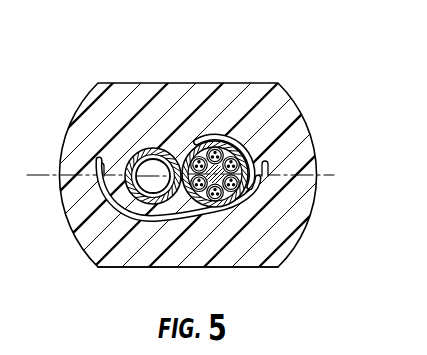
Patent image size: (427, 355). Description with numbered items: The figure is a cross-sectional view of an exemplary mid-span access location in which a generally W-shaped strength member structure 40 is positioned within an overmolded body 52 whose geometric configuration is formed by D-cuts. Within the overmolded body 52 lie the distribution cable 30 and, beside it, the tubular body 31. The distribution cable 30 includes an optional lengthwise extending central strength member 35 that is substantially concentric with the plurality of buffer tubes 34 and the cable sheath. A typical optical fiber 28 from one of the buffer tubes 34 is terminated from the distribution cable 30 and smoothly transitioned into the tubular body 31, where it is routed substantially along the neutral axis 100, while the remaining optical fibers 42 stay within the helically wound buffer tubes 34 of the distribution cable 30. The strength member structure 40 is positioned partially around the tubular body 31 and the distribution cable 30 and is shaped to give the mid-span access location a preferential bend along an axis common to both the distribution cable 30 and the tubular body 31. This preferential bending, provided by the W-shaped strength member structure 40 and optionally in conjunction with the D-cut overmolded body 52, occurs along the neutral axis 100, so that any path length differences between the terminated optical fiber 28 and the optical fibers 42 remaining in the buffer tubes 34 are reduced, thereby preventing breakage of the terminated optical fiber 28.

The neutral axis 100 is at (321, 176).
The overmolded body 52 is at (103, 128).
The strength member structure 40 is at (99, 266).
The optical fiber 28 is at (152, 117).
The tubular body 31 is at (152, 148).
The distribution cable 30 is at (221, 140).
The central strength member 35 is at (228, 140).
The buffer tube 34 is at (238, 200).
The optical fiber 42 is at (251, 187).